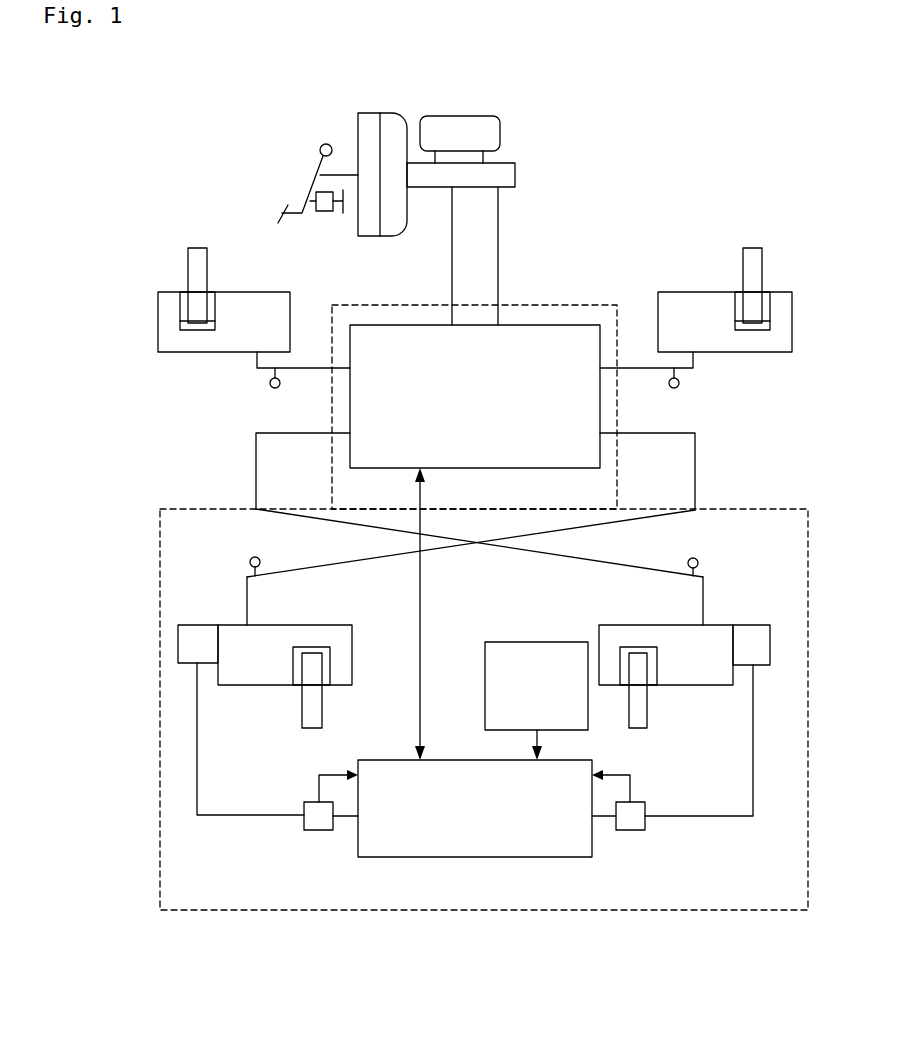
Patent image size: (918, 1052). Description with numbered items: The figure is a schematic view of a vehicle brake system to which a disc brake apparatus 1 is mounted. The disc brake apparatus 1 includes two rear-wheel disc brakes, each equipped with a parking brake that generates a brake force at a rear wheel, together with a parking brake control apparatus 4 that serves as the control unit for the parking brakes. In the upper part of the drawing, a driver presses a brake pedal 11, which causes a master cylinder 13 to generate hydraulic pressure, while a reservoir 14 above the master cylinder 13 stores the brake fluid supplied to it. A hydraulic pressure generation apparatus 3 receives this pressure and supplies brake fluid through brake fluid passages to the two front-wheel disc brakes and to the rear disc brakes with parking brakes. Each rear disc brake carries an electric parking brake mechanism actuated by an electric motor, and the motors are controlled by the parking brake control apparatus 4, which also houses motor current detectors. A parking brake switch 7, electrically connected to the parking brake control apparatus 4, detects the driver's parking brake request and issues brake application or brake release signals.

The disc brake apparatus 1 is at (580, 272).
The hydraulic pressure generation apparatus 3 is at (507, 472).
The parking brake control apparatus 4 is at (388, 757).
The parking brake switch 7 is at (483, 690).
The brake pedal 11 is at (283, 212).
The master cylinder 13 is at (515, 178).
The reservoir 14 is at (490, 132).